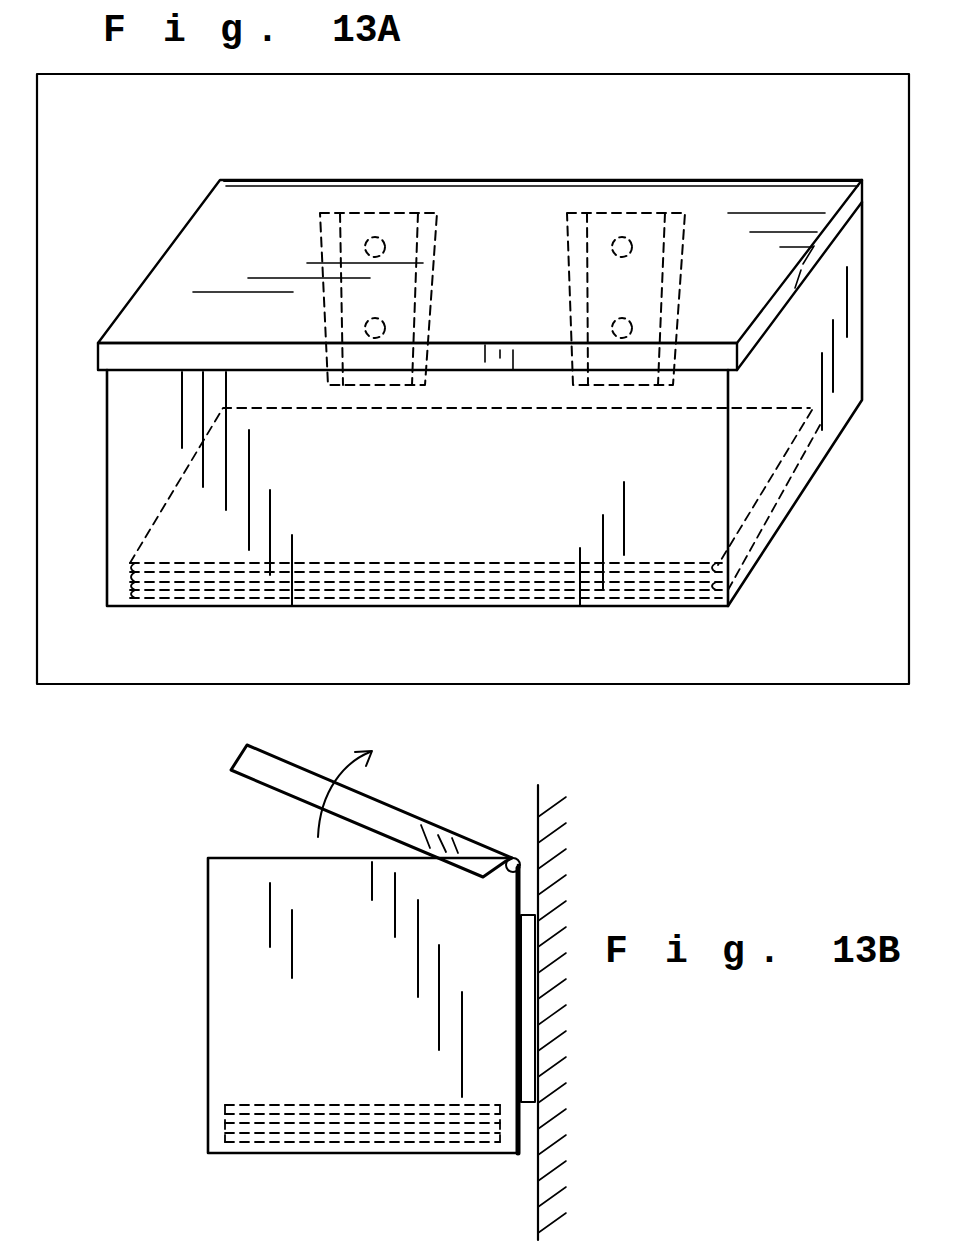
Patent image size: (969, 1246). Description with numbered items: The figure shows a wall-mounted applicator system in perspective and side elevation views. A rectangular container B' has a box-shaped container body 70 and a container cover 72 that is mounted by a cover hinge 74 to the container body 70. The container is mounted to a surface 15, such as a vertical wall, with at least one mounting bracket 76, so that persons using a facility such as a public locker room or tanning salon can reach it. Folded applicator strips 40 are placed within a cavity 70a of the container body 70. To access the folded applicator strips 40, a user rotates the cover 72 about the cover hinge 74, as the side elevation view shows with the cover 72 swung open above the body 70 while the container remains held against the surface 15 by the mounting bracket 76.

In FIG. 13A, the surface 15 is at (336, 139).
In FIG. 13B, the surface 15 is at (540, 1175).
In FIG. 13A, the folded applicator strips 40 is at (450, 527).
In FIG. 13B, the folded applicator strips 40 is at (377, 1132).
In FIG. 13A, the container body 70 is at (133, 515).
In FIG. 13B, the container body 70 is at (262, 1035).
In FIG. 13A, the cavity 70a is at (687, 467).
In FIG. 13A, the container cover 72 is at (222, 262).
In FIG. 13B, the container cover 72 is at (390, 820).
In FIG. 13A, the cover hinge 74 is at (617, 180).
In FIG. 13B, the cover hinge 74 is at (520, 862).
In FIG. 13A, the mounting bracket 76 is at (437, 372).
In FIG. 13B, the mounting bracket 76 is at (528, 1007).
In FIG. 13A, the container B' is at (808, 697).
In FIG. 13B, the container B' is at (115, 936).